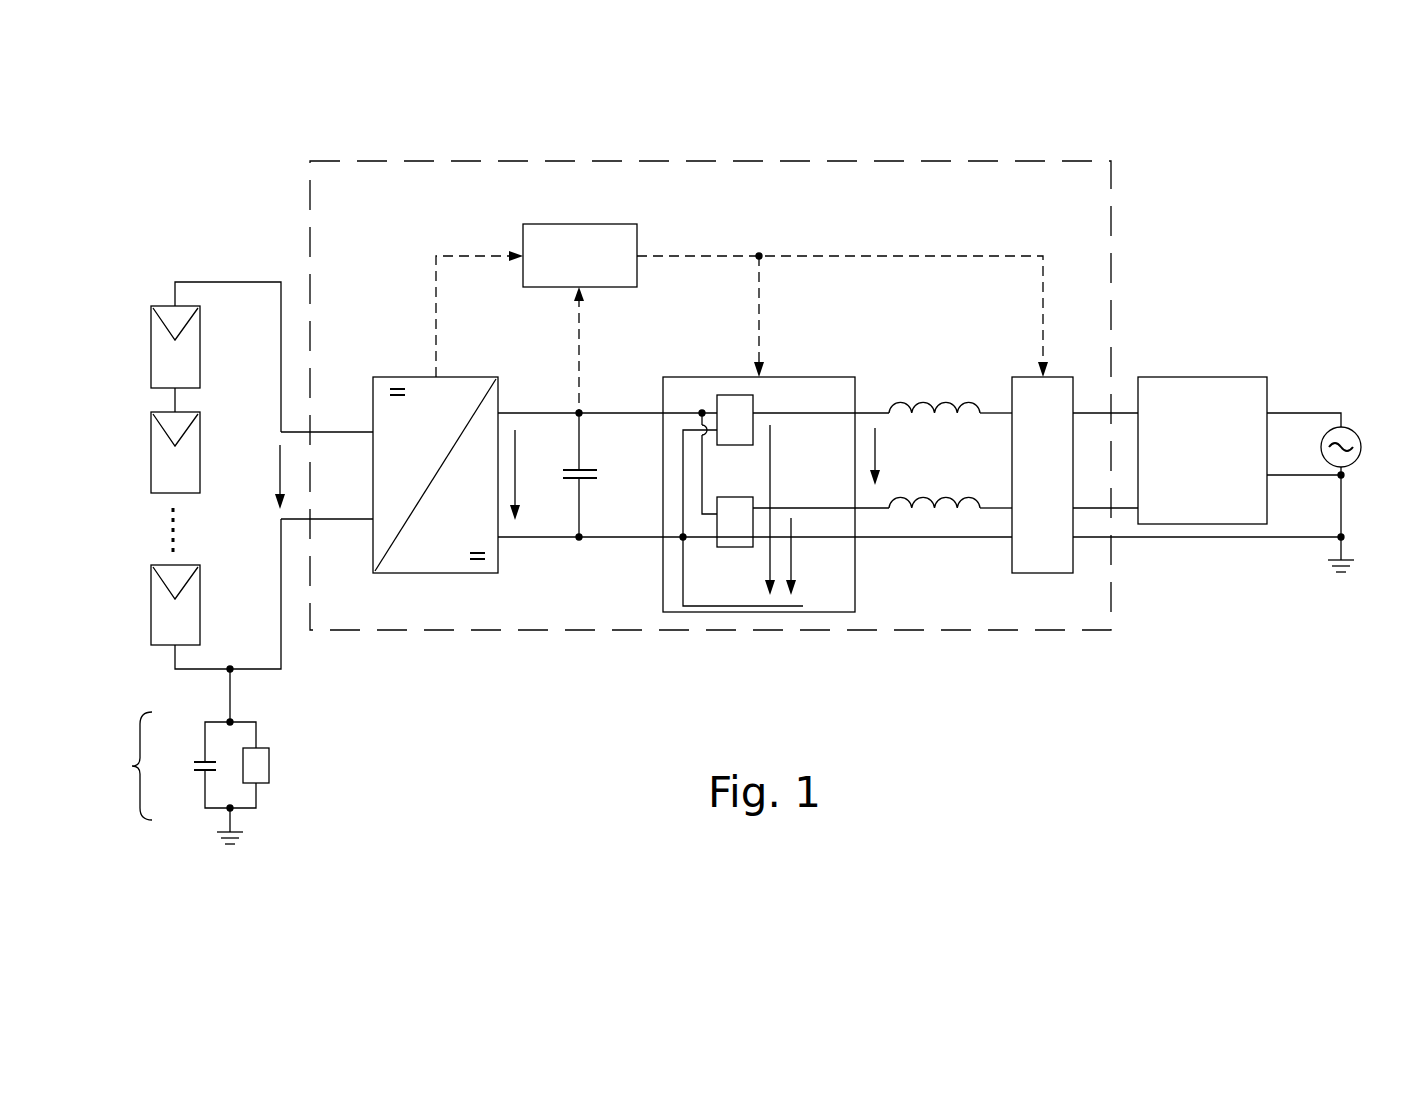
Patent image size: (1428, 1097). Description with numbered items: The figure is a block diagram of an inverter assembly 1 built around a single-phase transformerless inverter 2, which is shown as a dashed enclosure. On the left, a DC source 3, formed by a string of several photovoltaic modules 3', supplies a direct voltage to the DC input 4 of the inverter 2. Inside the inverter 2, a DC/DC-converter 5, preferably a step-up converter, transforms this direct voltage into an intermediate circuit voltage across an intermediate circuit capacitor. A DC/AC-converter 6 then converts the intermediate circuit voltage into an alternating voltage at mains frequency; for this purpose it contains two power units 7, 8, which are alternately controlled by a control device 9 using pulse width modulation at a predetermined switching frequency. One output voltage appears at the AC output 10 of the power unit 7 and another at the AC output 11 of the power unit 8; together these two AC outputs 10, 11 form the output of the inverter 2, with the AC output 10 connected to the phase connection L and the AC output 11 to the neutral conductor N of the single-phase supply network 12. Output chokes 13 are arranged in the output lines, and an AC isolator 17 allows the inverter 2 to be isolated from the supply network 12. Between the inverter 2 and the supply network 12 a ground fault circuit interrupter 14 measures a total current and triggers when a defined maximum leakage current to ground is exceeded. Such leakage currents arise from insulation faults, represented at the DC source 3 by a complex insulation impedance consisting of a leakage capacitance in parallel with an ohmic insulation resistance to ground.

The inverter assembly 1 is at (403, 722).
The inverter 2 is at (382, 214).
The DC source 3 is at (183, 422).
The photovoltaic module 3' is at (143, 475).
The DC input 4 is at (333, 502).
The DC/DC-converter 5 is at (411, 461).
The DC/AC-converter 6 is at (818, 405).
The power unit 7 is at (743, 430).
The power unit 8 is at (744, 532).
The control device 9 is at (590, 264).
The AC output 10 is at (858, 412).
The AC output 11 is at (854, 507).
The supply network 12 is at (1367, 424).
The output chokes 13 is at (944, 400).
The ground fault circuit interrupter 14 is at (1220, 422).
The AC isolator 17 is at (1055, 477).